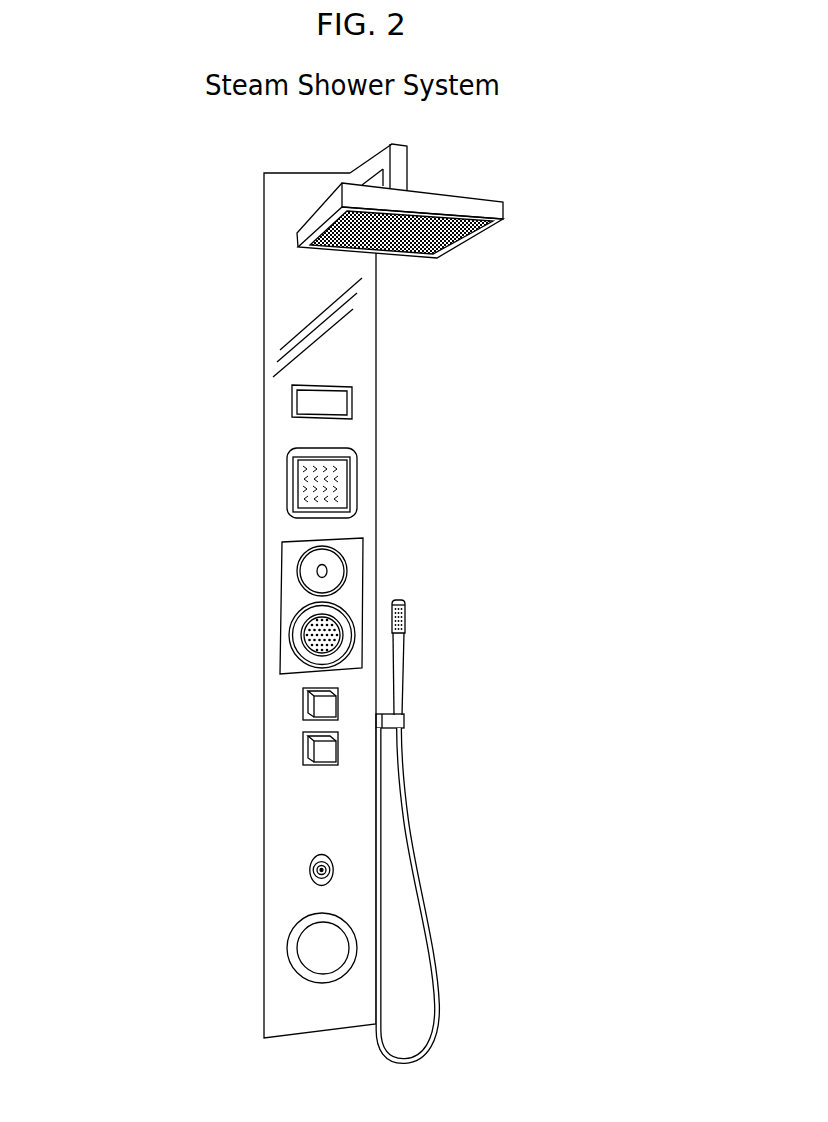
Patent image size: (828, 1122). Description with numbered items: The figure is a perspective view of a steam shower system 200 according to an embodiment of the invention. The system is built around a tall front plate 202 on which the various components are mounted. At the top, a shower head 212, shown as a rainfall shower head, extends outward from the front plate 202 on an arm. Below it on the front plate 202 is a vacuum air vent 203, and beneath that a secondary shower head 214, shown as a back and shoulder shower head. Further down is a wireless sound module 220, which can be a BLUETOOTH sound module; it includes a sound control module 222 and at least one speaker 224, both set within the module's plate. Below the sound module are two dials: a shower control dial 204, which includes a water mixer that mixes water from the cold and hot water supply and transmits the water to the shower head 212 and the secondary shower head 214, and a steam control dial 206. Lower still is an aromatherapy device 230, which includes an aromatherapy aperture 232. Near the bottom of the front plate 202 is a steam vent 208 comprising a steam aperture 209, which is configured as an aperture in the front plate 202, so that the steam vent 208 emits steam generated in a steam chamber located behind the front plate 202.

The steam shower system 200 is at (168, 198).
The front plate 202 is at (263, 298).
The vacuum air vent 203 is at (355, 392).
The shower control dial 204 is at (303, 712).
The steam control dial 206 is at (303, 745).
The steam vent 208 is at (274, 930).
The steam aperture 209 is at (323, 952).
The shower head 212 is at (512, 206).
The secondary shower head 214 is at (278, 488).
The wireless sound module 220 is at (270, 592).
The sound control module 222 is at (300, 563).
The speaker 224 is at (303, 638).
The aromatherapy device 230 is at (307, 870).
The aromatherapy aperture 232 is at (322, 863).